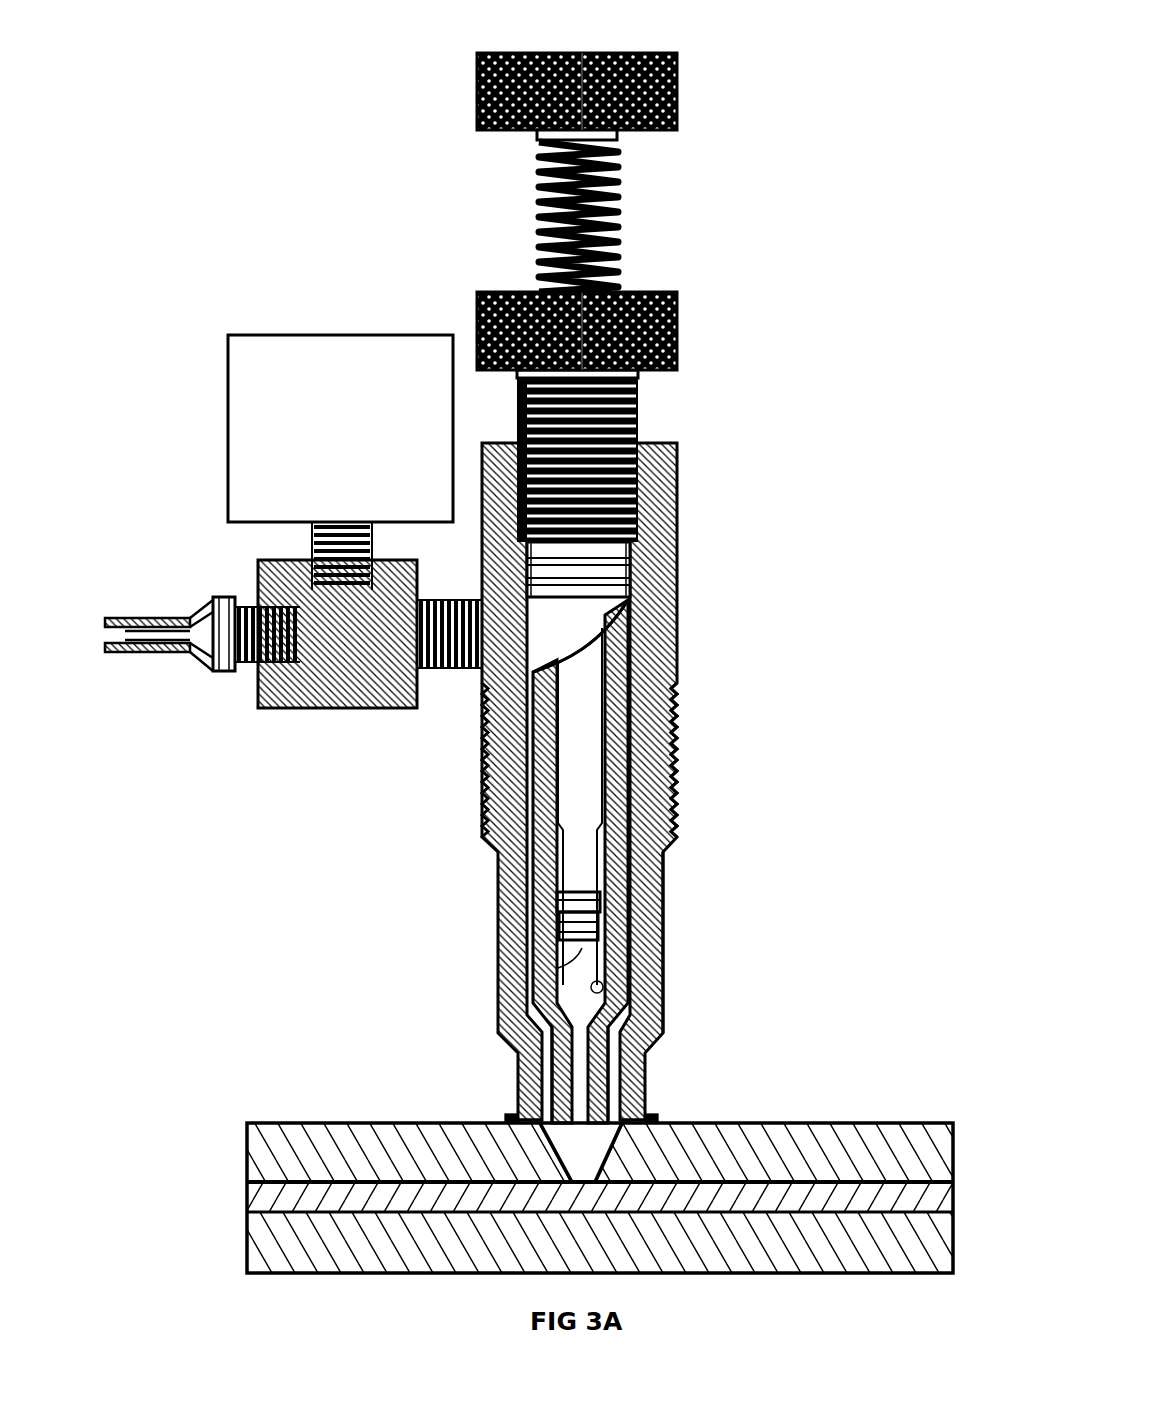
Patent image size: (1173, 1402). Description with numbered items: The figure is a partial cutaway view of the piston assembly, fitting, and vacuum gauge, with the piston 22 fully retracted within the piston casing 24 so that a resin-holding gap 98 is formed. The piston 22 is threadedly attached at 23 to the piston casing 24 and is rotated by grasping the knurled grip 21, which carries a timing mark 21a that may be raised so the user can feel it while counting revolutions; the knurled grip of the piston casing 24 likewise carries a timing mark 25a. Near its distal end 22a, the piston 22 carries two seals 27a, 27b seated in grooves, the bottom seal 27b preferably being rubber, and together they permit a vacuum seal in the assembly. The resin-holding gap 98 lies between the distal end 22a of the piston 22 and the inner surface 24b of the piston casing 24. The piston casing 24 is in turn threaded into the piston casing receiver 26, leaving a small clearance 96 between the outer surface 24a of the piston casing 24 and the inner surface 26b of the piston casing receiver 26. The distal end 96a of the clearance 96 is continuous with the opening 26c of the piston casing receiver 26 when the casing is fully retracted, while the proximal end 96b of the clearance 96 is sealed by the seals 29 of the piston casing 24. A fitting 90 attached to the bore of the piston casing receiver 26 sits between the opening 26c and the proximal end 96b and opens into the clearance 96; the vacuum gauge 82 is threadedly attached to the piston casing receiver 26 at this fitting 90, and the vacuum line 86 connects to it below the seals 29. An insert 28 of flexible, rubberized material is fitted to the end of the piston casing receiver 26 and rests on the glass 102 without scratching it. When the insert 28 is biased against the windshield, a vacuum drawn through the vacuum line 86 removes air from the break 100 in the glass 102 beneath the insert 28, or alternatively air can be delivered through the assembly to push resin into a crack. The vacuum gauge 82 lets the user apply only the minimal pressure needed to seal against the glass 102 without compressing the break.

The knurled grip 21 is at (668, 65).
The timing mark 21a is at (593, 52).
The threaded attachment 23 is at (617, 147).
The timing mark 25a is at (615, 208).
The piston casing 24 is at (633, 342).
The outer surface of piston casing 24a is at (632, 717).
The inner surface of piston casing 24b is at (600, 985).
The piston casing receiver 26 is at (630, 570).
The inner surface of piston casing receiver 26b is at (612, 740).
The opening of piston casing receiver 26c is at (497, 1120).
The seals 29 is at (630, 548).
The piston 22 is at (570, 737).
The distal end of piston 22a is at (535, 950).
The seal 27a is at (600, 905).
The bottom seal 27b is at (600, 925).
The clearance 96 is at (515, 893).
The distal end of clearance 96a is at (645, 1110).
The proximal end of clearance 96b is at (612, 634).
The resin-holding gap 98 is at (573, 985).
The insert 28 is at (503, 1113).
The vacuum gauge 82 is at (290, 353).
The vacuum line 86 is at (146, 652).
The fitting 90 is at (300, 690).
The break 100 is at (595, 1148).
The glass 102 is at (813, 1263).